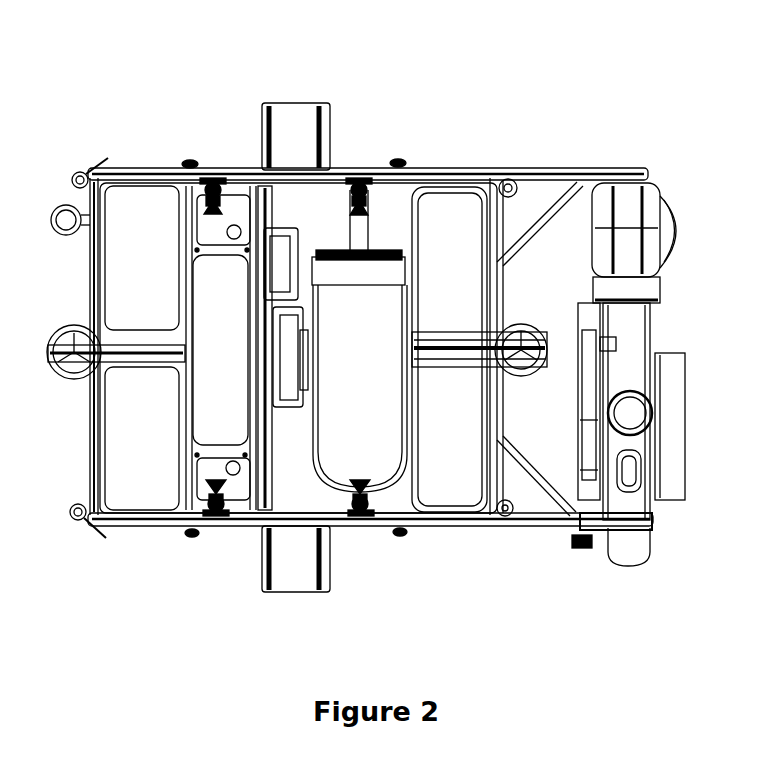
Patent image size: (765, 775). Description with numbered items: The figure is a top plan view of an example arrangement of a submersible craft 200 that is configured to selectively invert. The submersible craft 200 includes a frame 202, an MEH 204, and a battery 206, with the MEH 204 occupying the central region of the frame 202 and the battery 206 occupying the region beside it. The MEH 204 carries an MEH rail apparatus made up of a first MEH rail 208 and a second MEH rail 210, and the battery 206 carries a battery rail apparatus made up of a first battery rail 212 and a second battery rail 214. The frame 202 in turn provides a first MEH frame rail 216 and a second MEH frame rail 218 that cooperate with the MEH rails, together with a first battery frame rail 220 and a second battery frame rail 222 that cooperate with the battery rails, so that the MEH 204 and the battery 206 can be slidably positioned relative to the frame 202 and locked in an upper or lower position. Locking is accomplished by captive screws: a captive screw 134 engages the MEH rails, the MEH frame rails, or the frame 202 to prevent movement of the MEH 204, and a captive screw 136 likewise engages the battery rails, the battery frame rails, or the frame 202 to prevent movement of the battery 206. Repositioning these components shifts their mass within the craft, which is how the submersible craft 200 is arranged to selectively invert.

The submersible craft 200 is at (520, 98).
The frame 202 is at (463, 527).
The MEH 204 is at (380, 447).
The battery 206 is at (208, 420).
The first MEH rail 208 is at (365, 525).
The second MEH rail 210 is at (366, 170).
The first battery rail 212 is at (222, 525).
The second battery rail 214 is at (205, 170).
The first MEH frame rail 216 is at (360, 525).
The second MEH frame rail 218 is at (353, 170).
The first battery frame rail 220 is at (215, 525).
The second battery frame rail 222 is at (222, 170).
The captive screw 134 is at (360, 170).
The captive screw 136 is at (213, 170).